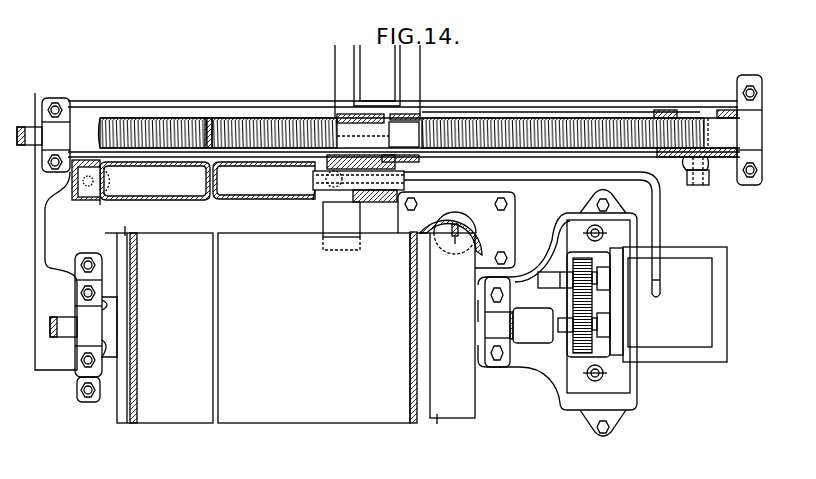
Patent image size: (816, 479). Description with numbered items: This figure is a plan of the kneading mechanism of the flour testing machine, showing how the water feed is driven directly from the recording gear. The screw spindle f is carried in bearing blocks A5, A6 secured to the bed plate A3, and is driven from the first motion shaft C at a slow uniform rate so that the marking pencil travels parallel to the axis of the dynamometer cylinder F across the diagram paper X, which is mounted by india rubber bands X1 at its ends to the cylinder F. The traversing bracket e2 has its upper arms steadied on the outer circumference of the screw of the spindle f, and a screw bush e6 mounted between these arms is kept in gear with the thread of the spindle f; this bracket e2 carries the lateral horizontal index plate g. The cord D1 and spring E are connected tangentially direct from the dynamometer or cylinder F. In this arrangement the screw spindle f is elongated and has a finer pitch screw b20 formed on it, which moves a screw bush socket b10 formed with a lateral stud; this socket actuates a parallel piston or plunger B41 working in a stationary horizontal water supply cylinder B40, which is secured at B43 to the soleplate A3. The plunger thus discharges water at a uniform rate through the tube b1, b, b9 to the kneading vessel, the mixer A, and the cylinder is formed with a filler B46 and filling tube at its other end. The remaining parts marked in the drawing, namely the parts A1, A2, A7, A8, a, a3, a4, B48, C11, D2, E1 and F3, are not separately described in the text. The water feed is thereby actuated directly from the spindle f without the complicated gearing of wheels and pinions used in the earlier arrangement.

The mixer A is at (687, 255).
The screws A1 is at (602, 303).
The frame plate A2 is at (557, 313).
The bed plate A3 is at (387, 230).
The bearing block A5 is at (365, 166).
The bearing block A6 is at (749, 130).
The bracket A7 is at (497, 322).
The bracket A8 is at (88, 327).
The gear rack a is at (573, 292).
The shaft a3 is at (575, 262).
The pinion bolt a4 is at (574, 348).
The water supply cylinder B40 is at (207, 181).
The piston or plunger B41 is at (489, 186).
The securing point of cylinder B43 is at (341, 226).
The filler B46 is at (80, 200).
The end piece B48 is at (98, 200).
The tube b is at (446, 184).
The tube b1 is at (313, 196).
The tube b9 is at (660, 284).
The screw bush socket b10 is at (662, 112).
The finer pitch screw b20 is at (502, 122).
The first motion shaft C is at (63, 327).
The knob C11 is at (531, 325).
The cord D1 is at (478, 257).
The bearing block D2 is at (490, 235).
The spring E is at (452, 227).
The bolt E1 is at (464, 229).
The traversing bracket e2 is at (341, 114).
The screw bush e6 is at (378, 134).
The dynamometer cylinder F is at (304, 325).
The platen end F3 is at (109, 327).
The screw spindle f is at (113, 127).
The index plate g is at (377, 81).
The diagram paper X is at (296, 328).
The india rubber bands X1 is at (137, 388).